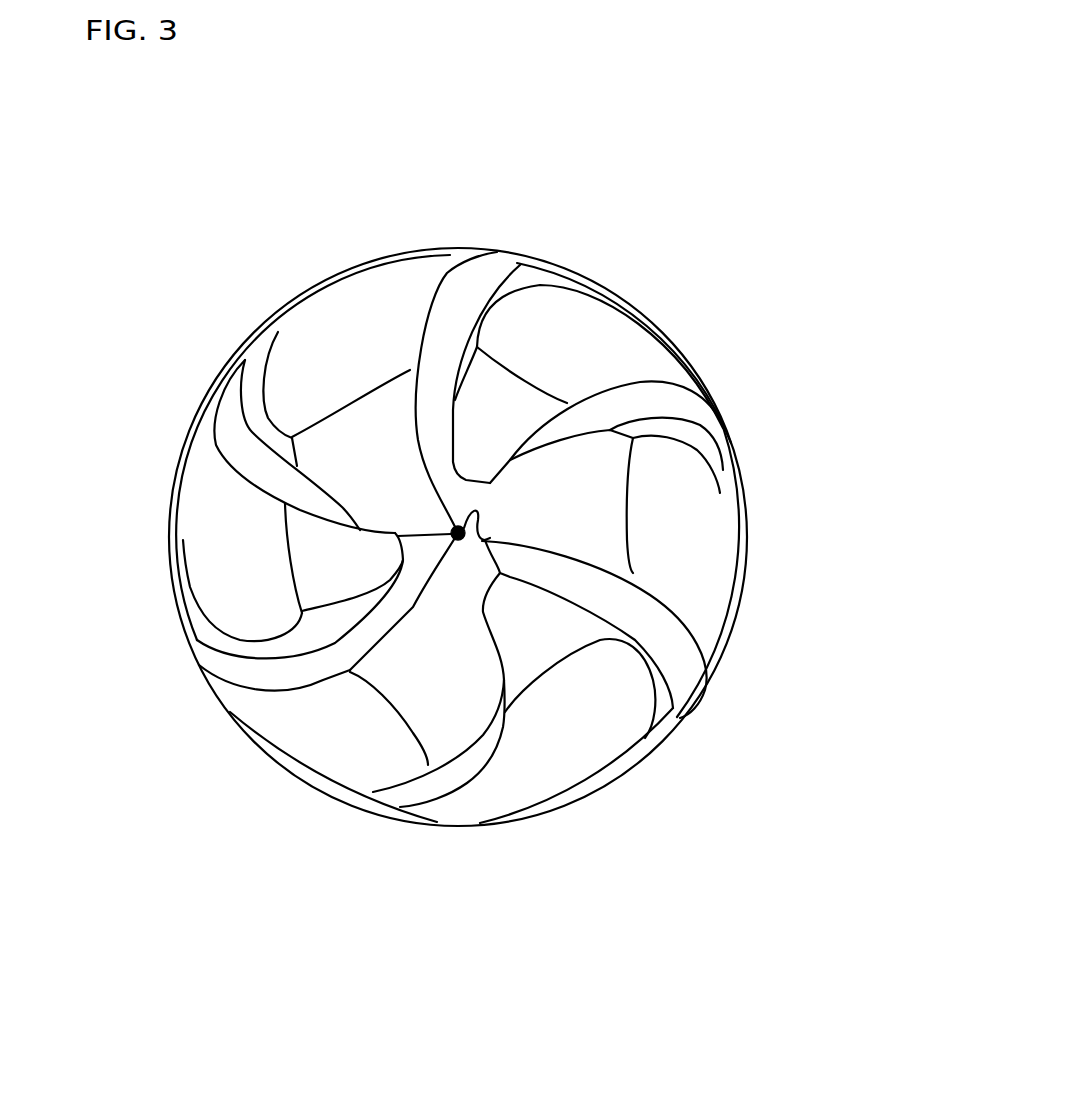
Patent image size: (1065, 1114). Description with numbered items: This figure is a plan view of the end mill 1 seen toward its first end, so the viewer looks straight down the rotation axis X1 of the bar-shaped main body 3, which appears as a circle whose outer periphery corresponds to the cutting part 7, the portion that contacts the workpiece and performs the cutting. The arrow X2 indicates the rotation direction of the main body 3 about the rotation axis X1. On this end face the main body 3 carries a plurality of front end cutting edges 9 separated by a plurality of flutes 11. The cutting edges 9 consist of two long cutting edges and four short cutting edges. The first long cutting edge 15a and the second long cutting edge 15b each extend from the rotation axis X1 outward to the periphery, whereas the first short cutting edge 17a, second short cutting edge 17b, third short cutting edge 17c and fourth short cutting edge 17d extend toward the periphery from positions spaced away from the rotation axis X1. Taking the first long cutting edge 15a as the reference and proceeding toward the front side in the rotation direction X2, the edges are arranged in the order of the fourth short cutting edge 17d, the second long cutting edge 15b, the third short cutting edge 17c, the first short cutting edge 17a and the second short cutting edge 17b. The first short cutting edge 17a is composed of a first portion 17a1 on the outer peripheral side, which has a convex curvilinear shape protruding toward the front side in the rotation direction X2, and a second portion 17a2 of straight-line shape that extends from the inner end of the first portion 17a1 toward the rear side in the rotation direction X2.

The end mill 1 is at (160, 321).
The main body 3 is at (724, 655).
The cutting part 7 is at (458, 537).
The cutting edges 9 is at (397, 534).
The flutes 11 is at (335, 368).
The first long cutting edge 15a is at (415, 418).
The second long cutting edge 15b is at (325, 683).
The first short cutting edge 17a is at (715, 539).
The first portion 17a1 is at (658, 592).
The second portion 17a2 is at (485, 524).
The second short cutting edge 17b is at (623, 382).
The third short cutting edge 17c is at (503, 727).
The fourth short cutting edge 17d is at (258, 487).
The rotation axis X1 is at (483, 747).
The rotation direction X2 is at (186, 711).